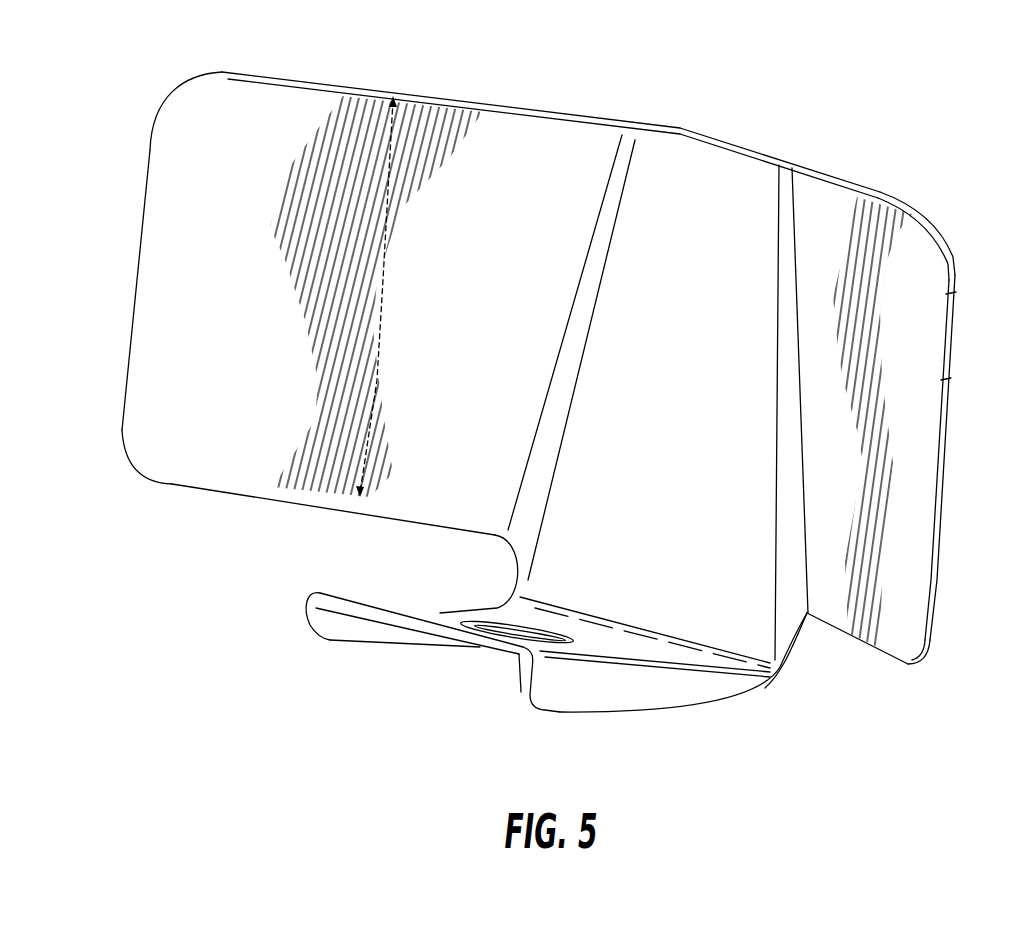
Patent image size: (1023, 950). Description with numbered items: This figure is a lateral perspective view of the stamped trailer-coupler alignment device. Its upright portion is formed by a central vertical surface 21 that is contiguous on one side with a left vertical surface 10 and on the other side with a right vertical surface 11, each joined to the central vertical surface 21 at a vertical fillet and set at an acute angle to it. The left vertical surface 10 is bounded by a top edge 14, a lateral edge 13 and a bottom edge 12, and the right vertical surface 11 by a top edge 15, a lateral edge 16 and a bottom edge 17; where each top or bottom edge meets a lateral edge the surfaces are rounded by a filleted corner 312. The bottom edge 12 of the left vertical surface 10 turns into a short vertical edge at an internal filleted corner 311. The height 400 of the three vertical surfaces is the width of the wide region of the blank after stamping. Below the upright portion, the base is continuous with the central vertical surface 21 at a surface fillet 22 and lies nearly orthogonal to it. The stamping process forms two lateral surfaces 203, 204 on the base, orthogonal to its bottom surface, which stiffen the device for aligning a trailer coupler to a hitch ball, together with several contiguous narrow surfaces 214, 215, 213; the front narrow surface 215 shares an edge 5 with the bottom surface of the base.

The left vertical surface 10 is at (272, 252).
The filleted corner 312 is at (195, 78).
The lateral edge 13 is at (140, 246).
The bottom edge 12 is at (222, 493).
The internal filleted corner 311 is at (503, 547).
The top edge 14 is at (396, 95).
The height 400 is at (386, 282).
The central vertical surface 21 is at (677, 233).
The surface fillet 22 is at (743, 143).
The top edge 15 is at (855, 183).
The right vertical surface 11 is at (893, 283).
The lateral edge 16 is at (947, 380).
The bottom edge 17 is at (857, 640).
The narrow surface 214 is at (305, 613).
The front narrow surface 215 is at (430, 627).
The lateral surface 204 is at (345, 630).
The edge 5 is at (502, 653).
The narrow surface 213 is at (520, 678).
The lateral surface 203 is at (587, 703).